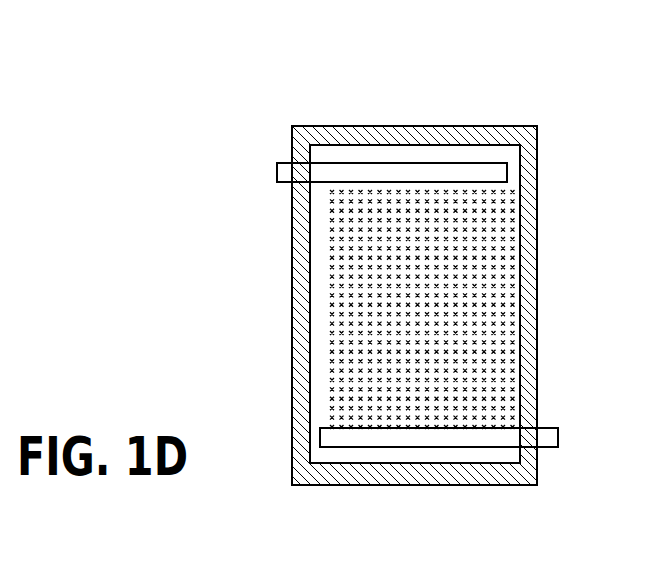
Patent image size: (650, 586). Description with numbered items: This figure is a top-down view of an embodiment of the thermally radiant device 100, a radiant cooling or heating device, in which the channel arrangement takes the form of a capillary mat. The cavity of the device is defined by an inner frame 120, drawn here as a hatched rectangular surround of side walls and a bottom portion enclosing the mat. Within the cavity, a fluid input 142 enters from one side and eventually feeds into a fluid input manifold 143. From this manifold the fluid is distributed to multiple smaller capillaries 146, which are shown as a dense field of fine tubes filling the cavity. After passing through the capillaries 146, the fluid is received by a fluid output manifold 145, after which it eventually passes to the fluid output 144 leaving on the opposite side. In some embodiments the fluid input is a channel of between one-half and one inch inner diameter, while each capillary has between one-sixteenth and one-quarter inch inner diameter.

The thermally radiant device 100 is at (368, 86).
The inner frame 120 is at (468, 485).
The fluid input 142 is at (272, 172).
The fluid input manifold 143 is at (383, 163).
The fluid output 144 is at (560, 438).
The fluid output manifold 145 is at (443, 445).
The capillaries 146 is at (330, 268).